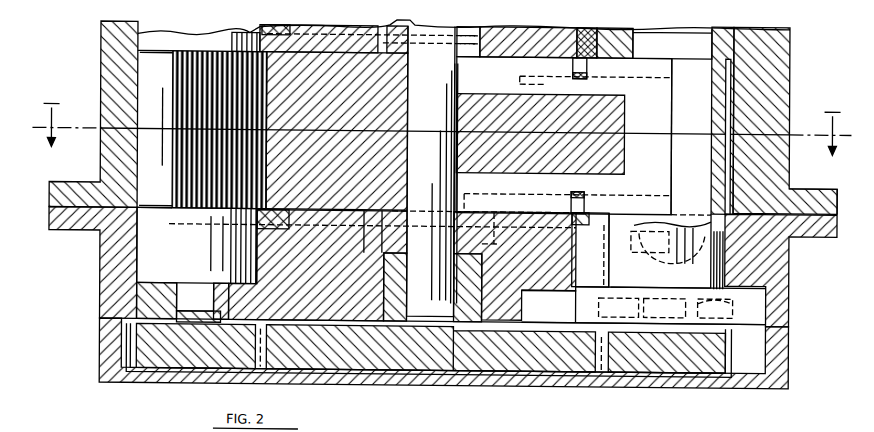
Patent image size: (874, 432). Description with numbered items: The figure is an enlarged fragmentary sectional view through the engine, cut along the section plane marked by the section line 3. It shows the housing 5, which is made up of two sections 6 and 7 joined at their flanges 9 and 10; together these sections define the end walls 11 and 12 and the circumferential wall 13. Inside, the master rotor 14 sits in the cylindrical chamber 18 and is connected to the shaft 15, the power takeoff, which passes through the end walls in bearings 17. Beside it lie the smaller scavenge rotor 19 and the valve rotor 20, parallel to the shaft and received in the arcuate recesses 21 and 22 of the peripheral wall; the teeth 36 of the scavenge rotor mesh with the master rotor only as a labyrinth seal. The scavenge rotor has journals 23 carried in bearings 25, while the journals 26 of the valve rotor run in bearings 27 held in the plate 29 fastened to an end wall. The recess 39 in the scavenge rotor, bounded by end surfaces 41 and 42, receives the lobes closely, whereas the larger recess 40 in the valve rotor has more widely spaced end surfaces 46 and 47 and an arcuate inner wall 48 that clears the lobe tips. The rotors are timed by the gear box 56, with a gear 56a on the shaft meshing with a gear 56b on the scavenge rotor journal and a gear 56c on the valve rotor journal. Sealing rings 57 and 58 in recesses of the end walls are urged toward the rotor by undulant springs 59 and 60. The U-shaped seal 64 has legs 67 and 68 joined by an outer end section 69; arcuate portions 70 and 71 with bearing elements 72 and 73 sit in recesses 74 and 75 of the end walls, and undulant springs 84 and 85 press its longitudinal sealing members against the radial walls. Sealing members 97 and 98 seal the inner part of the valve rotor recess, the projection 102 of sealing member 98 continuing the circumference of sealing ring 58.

The section line 3- 3 is at (441, 121).
The housing 5 is at (434, 349).
The housing section 6 is at (95, 46).
The housing section 7 is at (88, 248).
The flange 9 is at (815, 182).
The flange 10 is at (800, 235).
The end wall 11 is at (500, 52).
The end wall 12 is at (549, 306).
The circumferential wall 13 is at (775, 82).
The master rotor 14 is at (337, 131).
The shaft 15 is at (431, 118).
The bearings 17 is at (400, 285).
The cylindrical chamber 18 is at (328, 55).
The scavenge rotor 19 is at (197, 245).
The valve rotor 20 is at (661, 254).
The arcuate recess 21 is at (138, 62).
The arcuate recess 22 is at (713, 54).
The journals 23 is at (195, 300).
The bearings 25 is at (222, 298).
The journals 26 is at (655, 332).
The bearings 27 is at (730, 312).
The plate 29 is at (767, 292).
The teeth 36 is at (245, 165).
The recess 39 is at (147, 148).
The recess 40 is at (658, 43).
The end surface 41 is at (172, 53).
The end surface 42 is at (160, 205).
The end surface 46 is at (667, 27).
The end surface 47 is at (672, 255).
The arcuate inner wall 48 is at (713, 138).
The gear box 56 is at (782, 352).
The gear 56a is at (448, 350).
The gear 56b is at (128, 345).
The gear 56c is at (730, 368).
The sealing ring 57 is at (542, 73).
The sealing ring 58 is at (590, 250).
The undulant spring 59 is at (265, 27).
The undulant spring 60 is at (262, 224).
The seal 64 is at (680, 106).
The leg 67 is at (525, 64).
The leg 68 is at (567, 172).
The outer end section 69 is at (577, 136).
The arcuate portion 70 is at (455, 53).
The arcuate portion 71 is at (462, 228).
The arcuate element 72 is at (482, 56).
The arcuate element 73 is at (490, 243).
The recess 74 is at (372, 31).
The recess 75 is at (488, 224).
The undulant spring 84 is at (588, 74).
The undulant spring 85 is at (585, 182).
The sealing member 97 is at (589, 68).
The sealing member 98 is at (606, 262).
The projection 102 is at (604, 212).